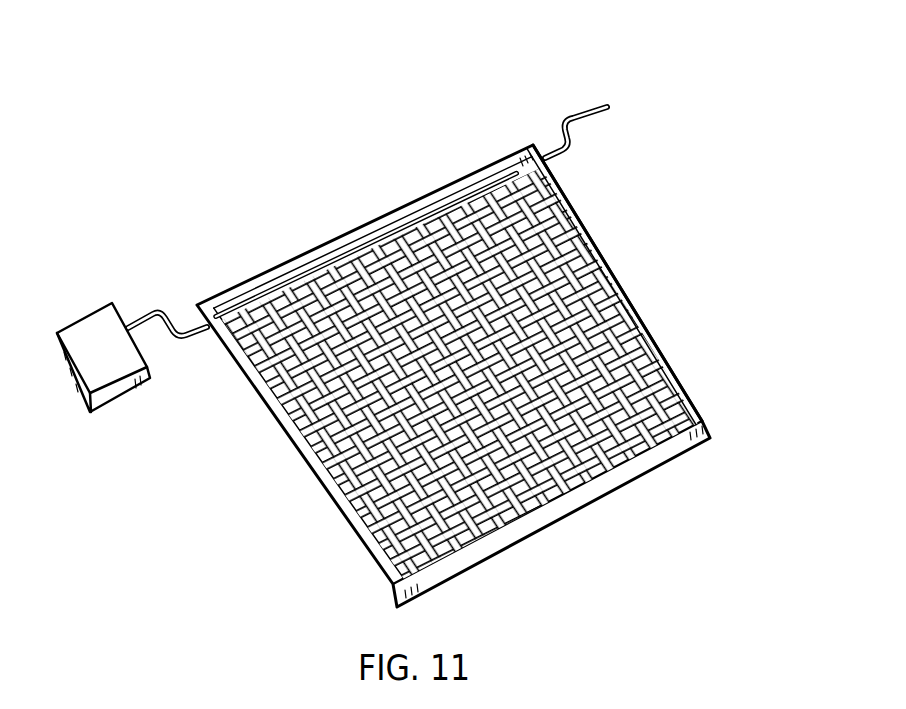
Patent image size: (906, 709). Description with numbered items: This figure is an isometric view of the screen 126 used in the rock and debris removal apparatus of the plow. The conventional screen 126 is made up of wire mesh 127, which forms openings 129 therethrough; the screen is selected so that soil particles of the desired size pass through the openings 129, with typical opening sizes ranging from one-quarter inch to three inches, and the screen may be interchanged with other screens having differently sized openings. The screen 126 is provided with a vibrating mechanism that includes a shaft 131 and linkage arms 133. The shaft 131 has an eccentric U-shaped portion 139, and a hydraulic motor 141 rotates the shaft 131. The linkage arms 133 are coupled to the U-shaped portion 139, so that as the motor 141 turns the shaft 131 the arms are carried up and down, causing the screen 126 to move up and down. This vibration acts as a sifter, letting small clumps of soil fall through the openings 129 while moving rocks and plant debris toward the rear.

The screen 126 is at (302, 460).
The wire mesh 127 is at (597, 257).
The openings 129 is at (622, 287).
The shaft 131 is at (160, 310).
The linkage arms 133 is at (578, 105).
The eccentric U-shaped portion 139 is at (343, 263).
The hydraulic motor 141 is at (90, 333).